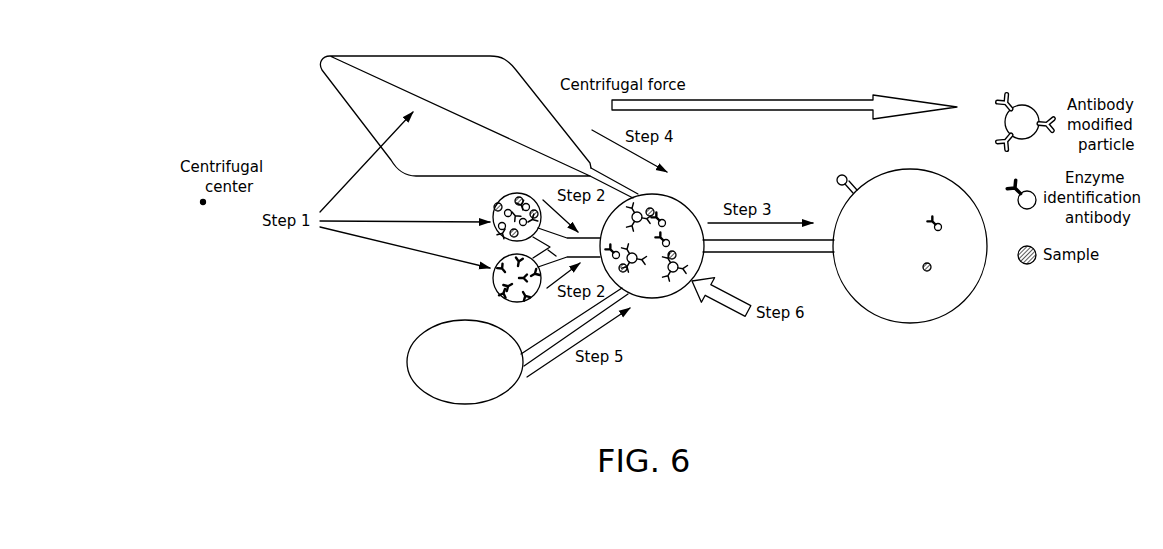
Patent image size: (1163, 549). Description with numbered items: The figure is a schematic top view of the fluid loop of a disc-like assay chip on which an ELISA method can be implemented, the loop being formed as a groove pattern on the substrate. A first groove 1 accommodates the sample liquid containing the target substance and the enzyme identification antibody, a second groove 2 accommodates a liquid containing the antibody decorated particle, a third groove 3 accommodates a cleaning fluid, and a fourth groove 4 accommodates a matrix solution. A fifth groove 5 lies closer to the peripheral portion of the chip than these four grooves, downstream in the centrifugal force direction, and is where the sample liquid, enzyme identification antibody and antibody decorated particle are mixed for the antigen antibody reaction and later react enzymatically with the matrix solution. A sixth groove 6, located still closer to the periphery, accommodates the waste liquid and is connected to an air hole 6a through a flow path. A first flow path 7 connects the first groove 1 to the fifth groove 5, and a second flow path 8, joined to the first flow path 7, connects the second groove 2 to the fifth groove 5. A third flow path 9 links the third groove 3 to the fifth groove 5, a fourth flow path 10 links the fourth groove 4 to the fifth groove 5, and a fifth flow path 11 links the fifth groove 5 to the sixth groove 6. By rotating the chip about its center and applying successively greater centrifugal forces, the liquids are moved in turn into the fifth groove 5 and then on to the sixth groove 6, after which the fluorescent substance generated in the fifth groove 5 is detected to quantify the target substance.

The first groove 1 is at (497, 200).
The second groove 2 is at (497, 290).
The third groove 3 is at (428, 66).
The fourth groove 4 is at (423, 347).
The fifth groove 5 is at (682, 207).
The sixth groove 6 is at (909, 182).
The air hole 6a is at (846, 175).
The first flow path 7 is at (589, 236).
The second flow path 8 is at (552, 258).
The third flow path 9 is at (612, 180).
The fourth flow path 10 is at (558, 335).
The fifth flow path 11 is at (826, 245).